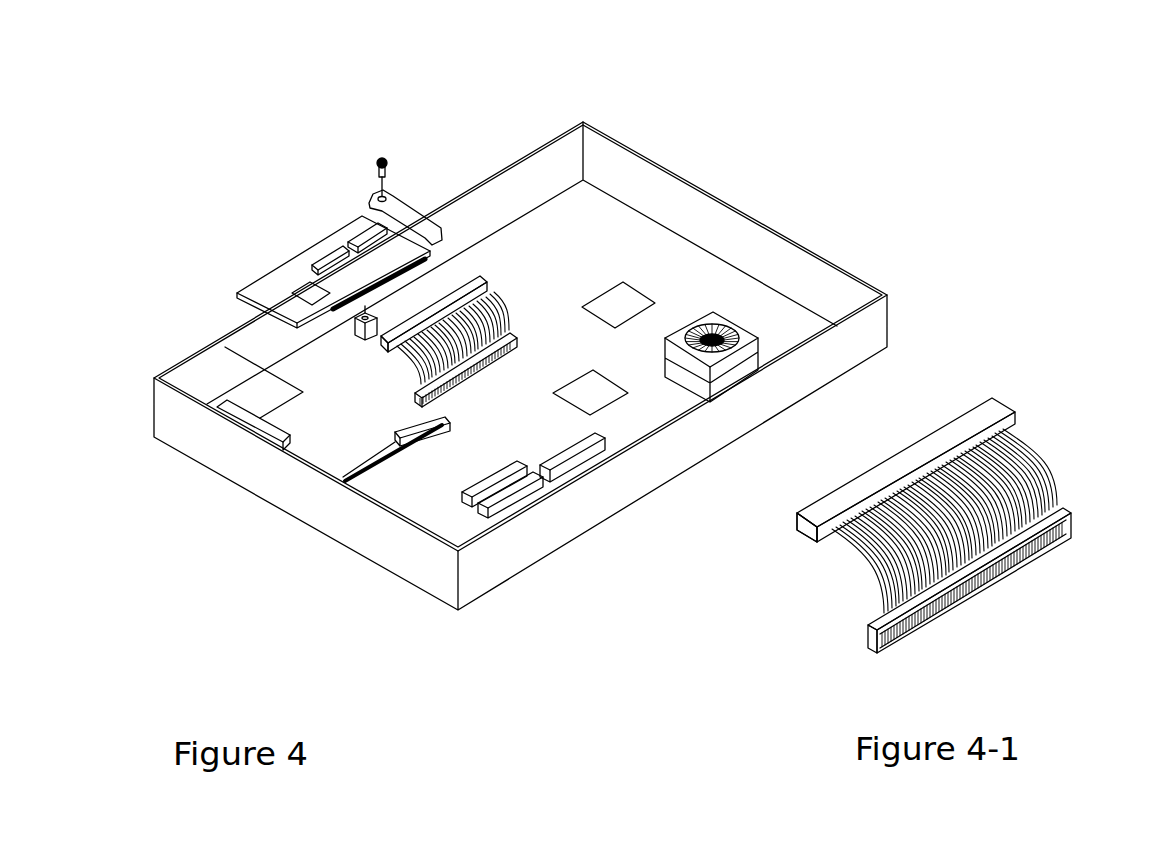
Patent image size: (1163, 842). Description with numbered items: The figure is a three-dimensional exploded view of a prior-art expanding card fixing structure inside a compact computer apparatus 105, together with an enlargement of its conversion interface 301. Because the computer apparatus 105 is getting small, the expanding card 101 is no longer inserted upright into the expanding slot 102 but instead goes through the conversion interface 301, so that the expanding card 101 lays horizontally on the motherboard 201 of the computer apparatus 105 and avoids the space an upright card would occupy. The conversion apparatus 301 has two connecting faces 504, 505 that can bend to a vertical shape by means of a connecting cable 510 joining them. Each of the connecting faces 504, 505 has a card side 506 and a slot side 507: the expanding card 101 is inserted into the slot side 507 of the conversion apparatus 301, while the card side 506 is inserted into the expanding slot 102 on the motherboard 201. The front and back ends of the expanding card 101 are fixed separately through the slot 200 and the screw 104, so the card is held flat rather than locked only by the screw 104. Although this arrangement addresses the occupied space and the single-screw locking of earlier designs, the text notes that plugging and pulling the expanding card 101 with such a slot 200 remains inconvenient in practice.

In FIG. 4, the expanding card 101 is at (317, 250).
In FIG. 4, the expanding slot 102 is at (398, 457).
In FIG. 4, the screw 104 is at (383, 157).
In FIG. 4, the computer apparatus 105 is at (520, 159).
In FIG. 4, the slot 200 is at (236, 413).
In FIG. 4, the motherboard 201 is at (715, 295).
In FIG. 4, the conversion interface 301 is at (493, 299).
In FIG. 4-1, the conversion interface 301 is at (1082, 382).
In FIG. 4-1, the connecting face 504 is at (803, 532).
In FIG. 4-1, the connecting face 505 is at (867, 644).
In FIG. 4-1, the card side 506 is at (979, 588).
In FIG. 4-1, the slot side 507 is at (894, 456).
In FIG. 4-1, the connecting cable 510 is at (1052, 456).